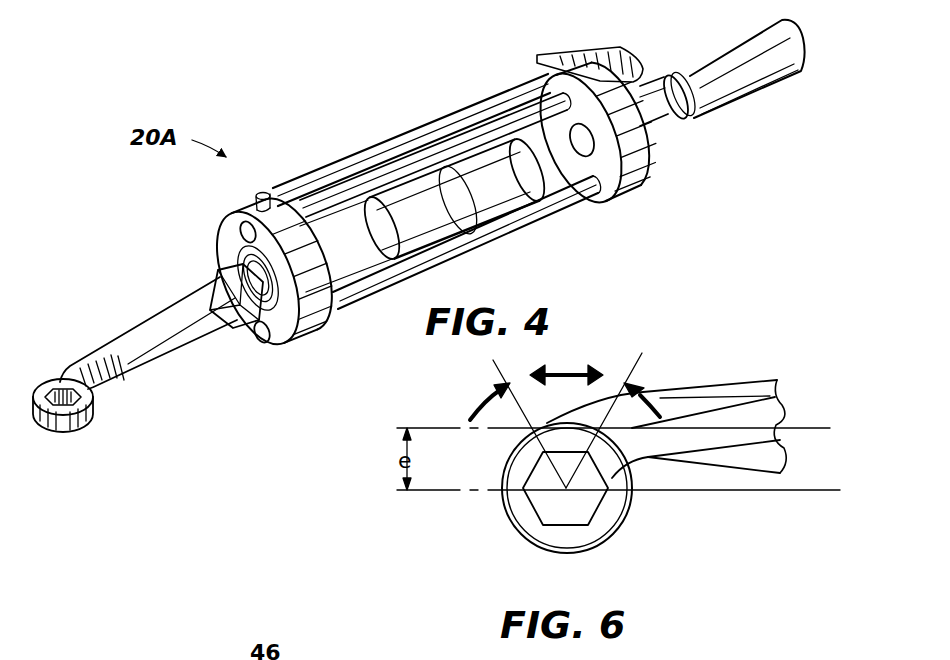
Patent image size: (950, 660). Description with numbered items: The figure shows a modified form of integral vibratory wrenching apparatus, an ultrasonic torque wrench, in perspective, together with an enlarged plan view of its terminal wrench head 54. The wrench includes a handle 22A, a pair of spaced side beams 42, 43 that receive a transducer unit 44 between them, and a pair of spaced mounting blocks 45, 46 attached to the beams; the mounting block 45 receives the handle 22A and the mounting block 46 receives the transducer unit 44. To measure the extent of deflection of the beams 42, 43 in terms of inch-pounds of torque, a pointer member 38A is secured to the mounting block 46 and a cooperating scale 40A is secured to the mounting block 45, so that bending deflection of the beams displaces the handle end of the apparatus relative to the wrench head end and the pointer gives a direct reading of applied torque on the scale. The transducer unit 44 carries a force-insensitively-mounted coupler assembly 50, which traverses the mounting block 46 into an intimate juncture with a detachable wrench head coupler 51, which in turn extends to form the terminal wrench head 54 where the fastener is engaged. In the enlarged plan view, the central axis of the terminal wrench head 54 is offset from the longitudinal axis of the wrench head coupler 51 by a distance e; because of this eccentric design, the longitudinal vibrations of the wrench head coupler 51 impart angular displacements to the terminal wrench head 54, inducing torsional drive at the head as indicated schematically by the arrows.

In FIG. 4, the handle 22A is at (712, 112).
In FIG. 4, the pointer member 38A is at (353, 162).
In FIG. 4, the scale 40A is at (572, 55).
In FIG. 4, the side beam 42 is at (524, 232).
In FIG. 4, the side beam 43 is at (500, 112).
In FIG. 4, the transducer unit 44 is at (440, 182).
In FIG. 4, the mounting block 45 is at (622, 166).
In FIG. 4, the mounting block 46 is at (295, 342).
In FIG. 4, the coupler assembly 50 is at (216, 262).
In FIG. 4, the wrench head coupler 51 is at (176, 296).
In FIG. 6, the wrench head coupler 51 is at (752, 378).
In FIG. 4, the terminal wrench head 54 is at (80, 416).
In FIG. 6, the terminal wrench head 54 is at (539, 488).